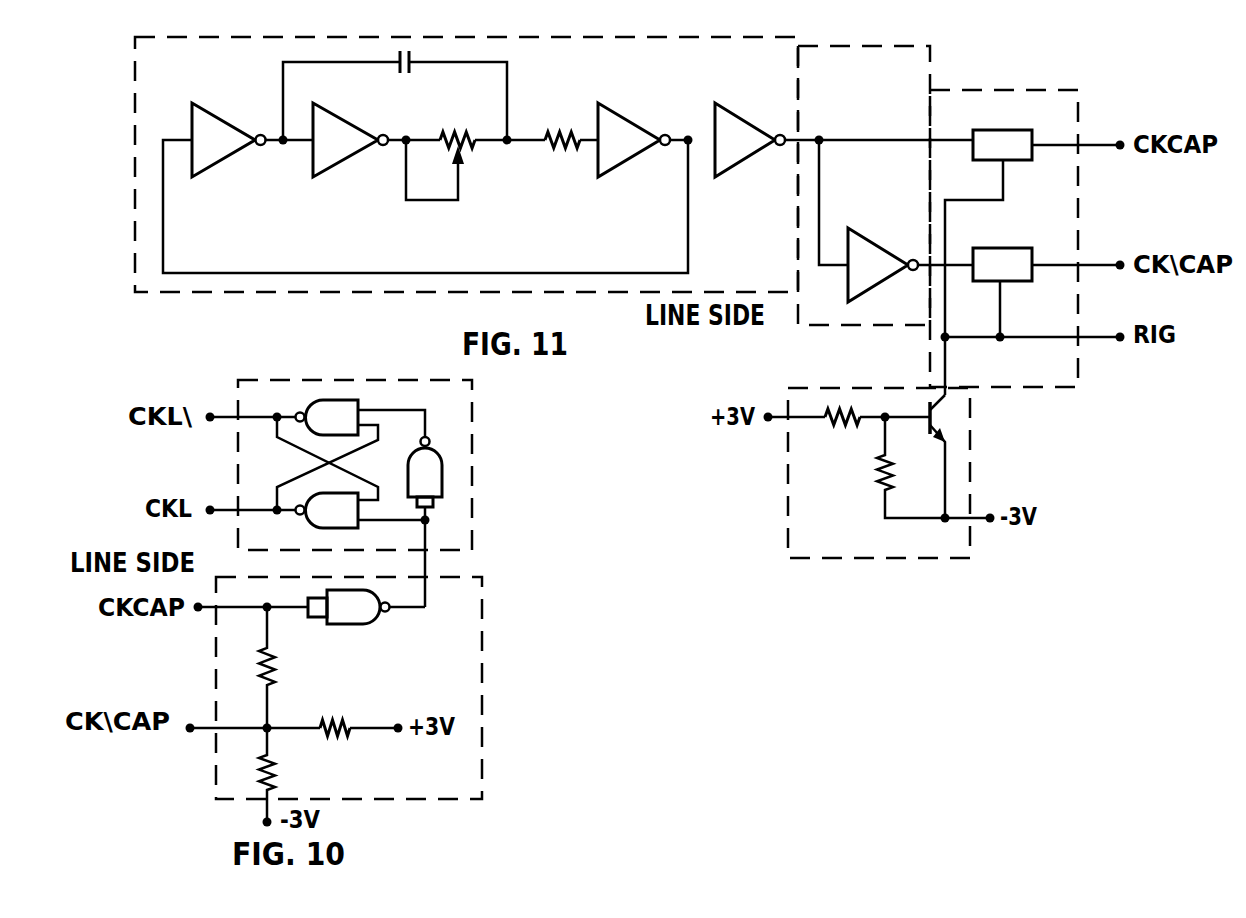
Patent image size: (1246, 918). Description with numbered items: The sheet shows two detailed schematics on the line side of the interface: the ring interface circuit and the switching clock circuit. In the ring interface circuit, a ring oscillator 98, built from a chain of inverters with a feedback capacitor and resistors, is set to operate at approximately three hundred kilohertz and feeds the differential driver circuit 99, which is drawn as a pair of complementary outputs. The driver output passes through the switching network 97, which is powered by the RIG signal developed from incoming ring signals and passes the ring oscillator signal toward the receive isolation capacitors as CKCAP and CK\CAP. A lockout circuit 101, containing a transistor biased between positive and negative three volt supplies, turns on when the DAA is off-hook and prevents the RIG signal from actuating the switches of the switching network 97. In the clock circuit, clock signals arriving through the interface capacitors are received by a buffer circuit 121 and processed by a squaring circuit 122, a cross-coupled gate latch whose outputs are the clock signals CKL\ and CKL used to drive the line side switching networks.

In FIG. 11, the ring oscillator 98 is at (327, 234).
In FIG. 11, the differential driver circuit 99 is at (882, 106).
In FIG. 11, the switching network 97 is at (1055, 224).
In FIG. 11, the lockout circuit 101 is at (862, 509).
In FIG. 10, the squaring circuit 122 is at (238, 442).
In FIG. 10, the buffer circuit 121 is at (215, 690).